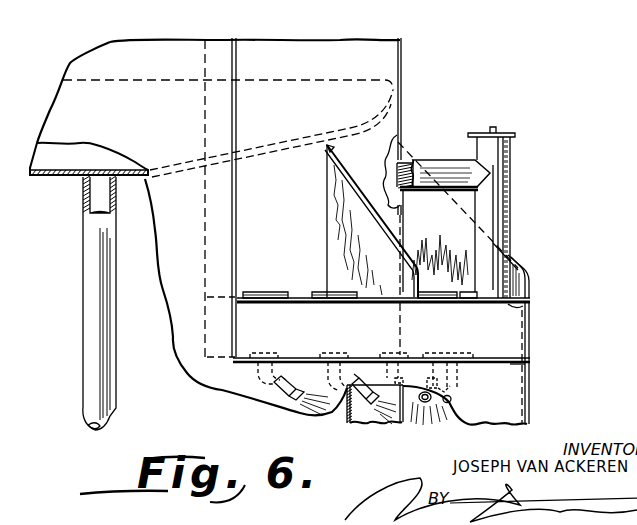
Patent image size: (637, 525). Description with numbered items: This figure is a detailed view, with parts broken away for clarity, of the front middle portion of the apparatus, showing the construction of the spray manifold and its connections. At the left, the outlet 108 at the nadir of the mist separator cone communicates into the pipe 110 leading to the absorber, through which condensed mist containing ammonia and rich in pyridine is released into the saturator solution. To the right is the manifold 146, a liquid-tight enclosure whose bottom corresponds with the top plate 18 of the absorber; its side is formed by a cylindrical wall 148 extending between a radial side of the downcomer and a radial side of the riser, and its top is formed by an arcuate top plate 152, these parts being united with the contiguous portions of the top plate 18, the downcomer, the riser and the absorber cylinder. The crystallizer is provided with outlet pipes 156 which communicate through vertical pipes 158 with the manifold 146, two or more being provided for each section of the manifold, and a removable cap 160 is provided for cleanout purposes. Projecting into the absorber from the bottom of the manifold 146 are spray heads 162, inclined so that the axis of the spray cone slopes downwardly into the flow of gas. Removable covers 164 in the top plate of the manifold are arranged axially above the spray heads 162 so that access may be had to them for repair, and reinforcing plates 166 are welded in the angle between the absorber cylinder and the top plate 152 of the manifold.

The top plate 18 is at (510, 363).
The outlet 108 is at (100, 172).
The pipe 110 is at (90, 267).
The manifold 146 is at (508, 320).
The cylindrical wall 148 is at (527, 337).
The arcuate top plate 152 is at (530, 302).
The outlet pipe 156 is at (442, 168).
The vertical pipe 158 is at (548, 208).
The removable cap 160 is at (494, 131).
The spray head 162 is at (313, 406).
The removable cover 164 is at (272, 288).
The reinforcing plate 166 is at (338, 195).